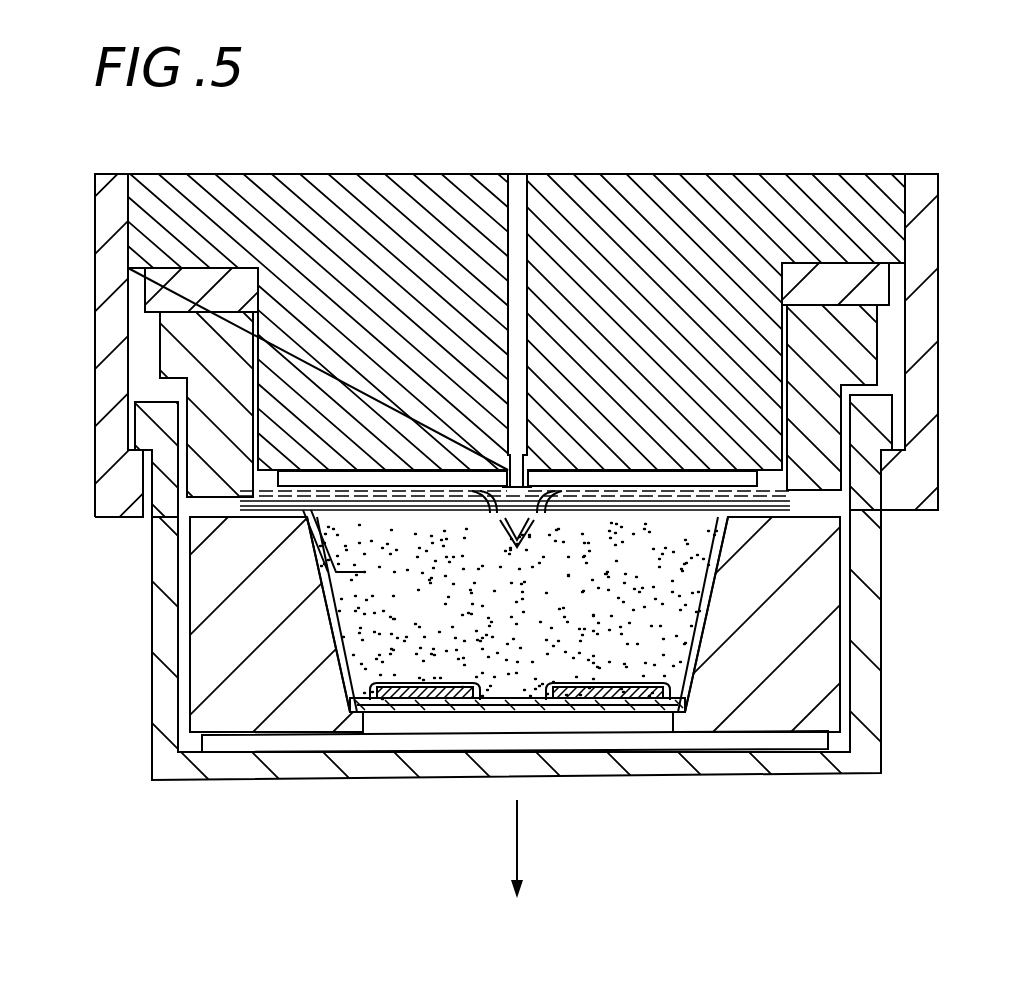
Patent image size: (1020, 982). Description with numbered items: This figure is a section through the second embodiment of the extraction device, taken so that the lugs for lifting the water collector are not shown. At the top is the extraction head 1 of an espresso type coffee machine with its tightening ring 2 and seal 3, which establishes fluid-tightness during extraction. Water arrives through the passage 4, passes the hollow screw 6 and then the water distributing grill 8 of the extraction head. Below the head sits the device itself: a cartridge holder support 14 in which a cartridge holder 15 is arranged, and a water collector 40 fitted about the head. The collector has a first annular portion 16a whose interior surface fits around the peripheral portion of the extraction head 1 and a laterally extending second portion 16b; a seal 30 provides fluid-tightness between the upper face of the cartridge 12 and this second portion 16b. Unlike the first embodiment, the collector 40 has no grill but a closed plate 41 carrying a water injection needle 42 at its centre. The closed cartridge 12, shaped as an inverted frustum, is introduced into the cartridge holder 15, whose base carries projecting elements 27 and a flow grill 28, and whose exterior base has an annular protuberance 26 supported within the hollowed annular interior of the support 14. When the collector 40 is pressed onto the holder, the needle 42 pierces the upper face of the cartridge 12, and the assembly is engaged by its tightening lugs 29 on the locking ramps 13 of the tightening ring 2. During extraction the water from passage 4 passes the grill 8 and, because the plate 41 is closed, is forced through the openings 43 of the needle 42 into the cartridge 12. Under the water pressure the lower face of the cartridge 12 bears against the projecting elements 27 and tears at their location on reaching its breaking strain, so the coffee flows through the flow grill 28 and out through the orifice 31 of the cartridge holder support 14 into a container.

The extraction head 1 is at (612, 196).
The tightening ring 2 is at (107, 503).
The seal 3 is at (168, 295).
The passage 4 is at (507, 175).
The hollow screw 6 is at (541, 477).
The water distributing grill 8 is at (762, 487).
The cartridge 12 is at (325, 570).
The locking ramps 13 is at (143, 478).
The cartridge holder support 14 is at (862, 640).
The cartridge holder 15 is at (800, 610).
The first annular portion 16a is at (670, 486).
The second portion 16b is at (763, 484).
The annular protuberance 26 is at (833, 748).
The projecting elements 27 is at (625, 710).
The flow grill 28 is at (410, 710).
The tightening lugs 29 is at (148, 432).
The seal 30 is at (795, 488).
The orifice 31 is at (518, 782).
The water collector 40 is at (850, 342).
The plate 41 is at (312, 525).
The water injection needle 42 is at (540, 560).
The openings 43 is at (493, 523).